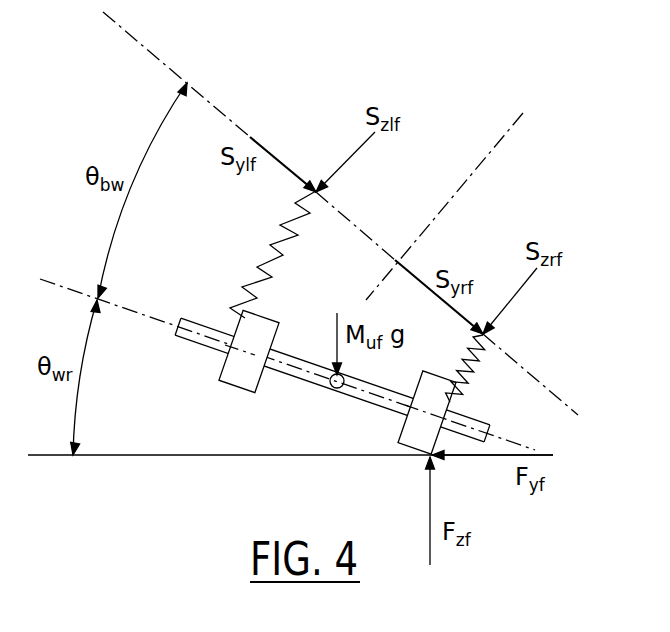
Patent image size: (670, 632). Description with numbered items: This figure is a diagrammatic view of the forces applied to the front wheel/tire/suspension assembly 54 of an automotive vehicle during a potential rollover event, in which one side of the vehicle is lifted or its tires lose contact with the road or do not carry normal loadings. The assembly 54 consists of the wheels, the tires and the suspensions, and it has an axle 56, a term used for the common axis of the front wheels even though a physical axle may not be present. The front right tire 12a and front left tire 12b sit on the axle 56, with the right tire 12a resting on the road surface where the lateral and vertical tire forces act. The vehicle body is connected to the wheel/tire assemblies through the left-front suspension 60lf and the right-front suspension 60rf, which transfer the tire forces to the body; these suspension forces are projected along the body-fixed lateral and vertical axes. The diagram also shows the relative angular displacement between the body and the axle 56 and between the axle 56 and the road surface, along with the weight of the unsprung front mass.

The wheel/tire/suspension assembly 54 is at (203, 308).
The axle 56 is at (383, 386).
The front right tire 12a is at (417, 441).
The front left tire 12b is at (240, 382).
The left-front suspension 60lf is at (270, 243).
The right-front suspension 60rf is at (452, 388).